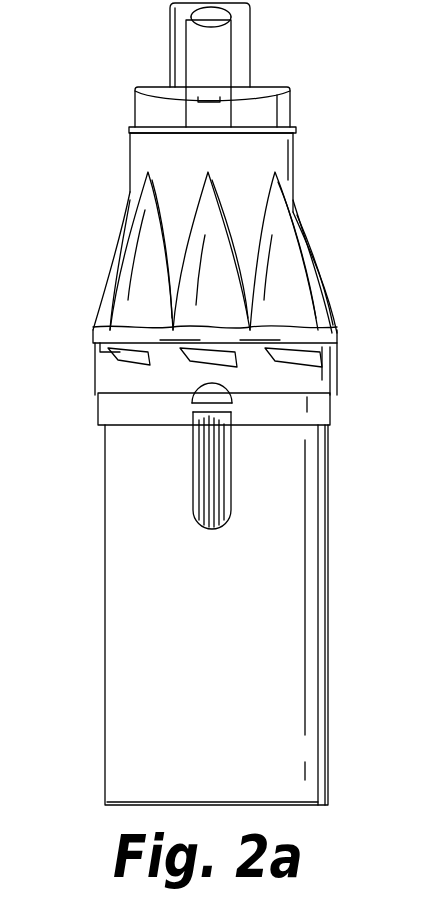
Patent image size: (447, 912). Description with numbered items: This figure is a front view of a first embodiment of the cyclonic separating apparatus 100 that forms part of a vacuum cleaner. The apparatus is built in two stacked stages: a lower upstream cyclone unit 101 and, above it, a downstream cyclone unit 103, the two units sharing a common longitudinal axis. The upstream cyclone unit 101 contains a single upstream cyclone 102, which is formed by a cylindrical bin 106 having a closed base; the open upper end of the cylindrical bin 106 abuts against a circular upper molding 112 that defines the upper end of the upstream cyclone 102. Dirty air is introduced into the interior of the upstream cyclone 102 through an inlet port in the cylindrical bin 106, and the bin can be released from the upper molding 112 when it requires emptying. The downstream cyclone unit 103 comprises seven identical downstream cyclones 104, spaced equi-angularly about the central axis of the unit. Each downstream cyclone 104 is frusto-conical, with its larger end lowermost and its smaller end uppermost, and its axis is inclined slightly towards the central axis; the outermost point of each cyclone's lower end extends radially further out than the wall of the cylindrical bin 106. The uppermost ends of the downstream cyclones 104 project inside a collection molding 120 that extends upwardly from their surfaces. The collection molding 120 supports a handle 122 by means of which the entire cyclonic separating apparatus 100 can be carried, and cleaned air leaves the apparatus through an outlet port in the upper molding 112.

The cyclonic separating apparatus 100 is at (340, 248).
The upstream cyclone unit 101 is at (78, 408).
The upstream cyclone 102 is at (307, 655).
The downstream cyclone unit 103 is at (78, 125).
The downstream cyclone 104 is at (322, 300).
The cylindrical bin 106 is at (300, 468).
The upper molding 112 is at (300, 380).
The collection molding 120 is at (268, 108).
The handle 122 is at (212, 43).